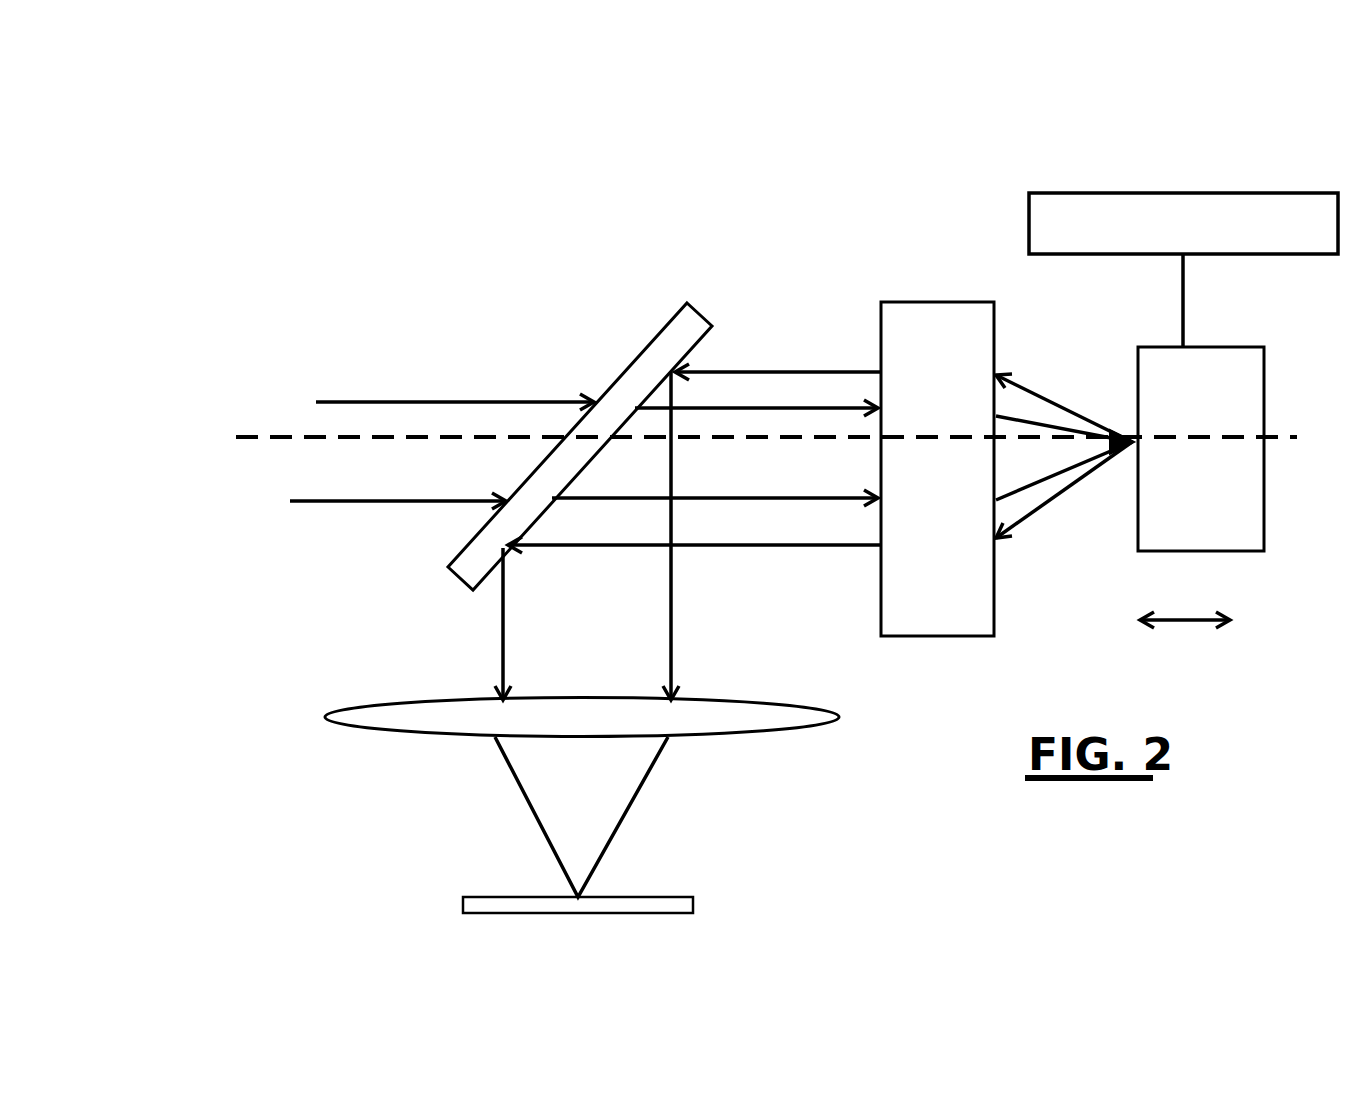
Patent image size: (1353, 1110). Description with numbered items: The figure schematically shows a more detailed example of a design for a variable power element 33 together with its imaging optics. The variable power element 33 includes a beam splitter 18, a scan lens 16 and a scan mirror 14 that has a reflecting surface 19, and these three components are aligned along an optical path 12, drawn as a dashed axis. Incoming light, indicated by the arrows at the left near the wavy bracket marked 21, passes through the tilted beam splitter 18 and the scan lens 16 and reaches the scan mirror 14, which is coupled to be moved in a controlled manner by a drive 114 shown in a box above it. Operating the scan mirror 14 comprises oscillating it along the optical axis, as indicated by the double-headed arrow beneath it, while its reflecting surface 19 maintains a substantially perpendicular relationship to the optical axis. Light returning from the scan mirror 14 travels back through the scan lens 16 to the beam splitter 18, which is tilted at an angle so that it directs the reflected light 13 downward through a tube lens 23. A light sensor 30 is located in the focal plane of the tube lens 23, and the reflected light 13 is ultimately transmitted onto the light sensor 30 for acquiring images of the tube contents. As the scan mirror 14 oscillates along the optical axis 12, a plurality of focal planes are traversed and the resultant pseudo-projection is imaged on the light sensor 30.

The variable power element 33 is at (684, 42).
The beam splitter 18 is at (650, 355).
The input laser beam 21 is at (387, 394).
The optical path 12 is at (386, 447).
The scan lens 16 is at (924, 355).
The reflecting surface 19 is at (1132, 367).
The scan mirror 14 is at (1190, 430).
The drive 114 is at (1192, 243).
The reflected light beams 13 is at (677, 637).
The tube lens 23 is at (327, 722).
The light sensor 30 is at (457, 907).